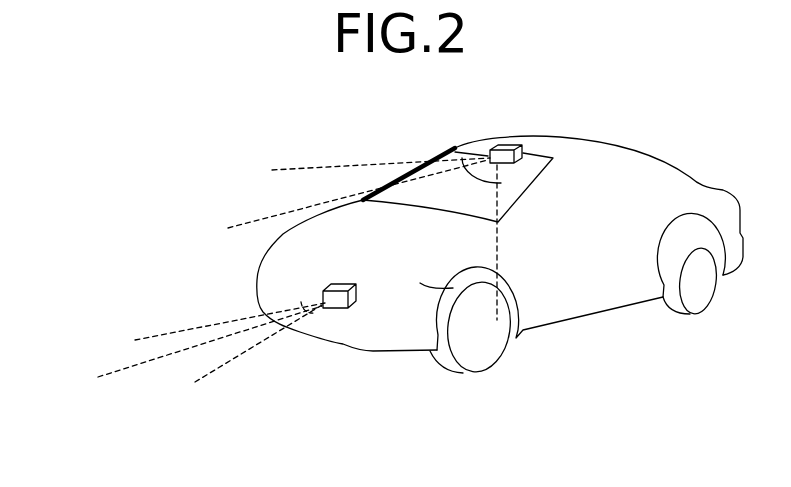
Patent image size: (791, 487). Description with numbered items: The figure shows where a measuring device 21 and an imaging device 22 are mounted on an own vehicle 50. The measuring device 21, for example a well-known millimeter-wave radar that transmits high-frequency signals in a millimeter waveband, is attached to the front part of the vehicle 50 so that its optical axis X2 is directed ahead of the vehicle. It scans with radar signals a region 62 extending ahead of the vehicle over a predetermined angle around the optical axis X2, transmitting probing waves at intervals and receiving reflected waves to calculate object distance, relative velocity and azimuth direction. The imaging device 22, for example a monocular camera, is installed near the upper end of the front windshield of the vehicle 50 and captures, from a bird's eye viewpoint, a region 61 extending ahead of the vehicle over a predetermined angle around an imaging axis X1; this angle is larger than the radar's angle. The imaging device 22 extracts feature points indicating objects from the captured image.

The own vehicle 50 is at (633, 140).
The imaging device 22 is at (504, 145).
The measuring device 21 is at (357, 300).
The region captured by imaging device 61 is at (294, 168).
The region scanned by measuring device 62 is at (153, 336).
The imaging axis X1 is at (339, 202).
The optical axis X2 is at (188, 352).